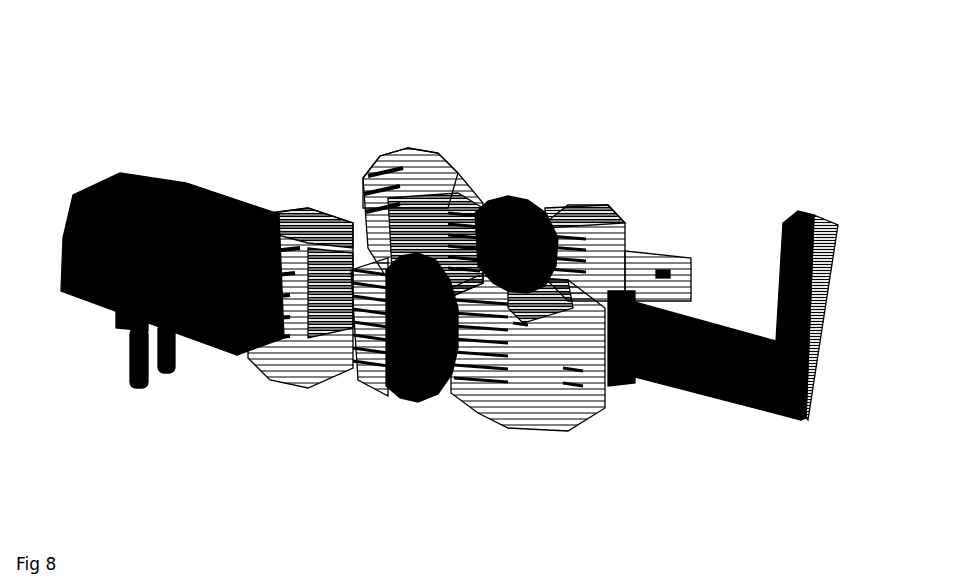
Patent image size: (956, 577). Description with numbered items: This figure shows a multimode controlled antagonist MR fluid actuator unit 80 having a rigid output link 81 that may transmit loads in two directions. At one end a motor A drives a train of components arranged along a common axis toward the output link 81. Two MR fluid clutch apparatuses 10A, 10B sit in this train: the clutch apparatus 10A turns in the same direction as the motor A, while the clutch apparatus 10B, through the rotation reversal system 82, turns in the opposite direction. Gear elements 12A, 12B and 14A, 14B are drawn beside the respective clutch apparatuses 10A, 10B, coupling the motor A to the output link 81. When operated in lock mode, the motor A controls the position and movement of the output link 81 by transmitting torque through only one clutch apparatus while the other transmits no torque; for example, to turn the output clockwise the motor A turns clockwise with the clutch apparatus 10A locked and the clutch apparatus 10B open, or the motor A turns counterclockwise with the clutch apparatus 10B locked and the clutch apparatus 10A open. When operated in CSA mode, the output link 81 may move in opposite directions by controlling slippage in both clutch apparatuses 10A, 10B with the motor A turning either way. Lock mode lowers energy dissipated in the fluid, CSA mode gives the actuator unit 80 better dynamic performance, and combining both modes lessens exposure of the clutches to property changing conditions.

The MR fluid actuator unit 80 is at (733, 82).
The motor A is at (188, 178).
The rotation reversal system 82 is at (368, 130).
The first gear 12A is at (305, 360).
The second gear 12B is at (447, 192).
The MR fluid clutch apparatus 10A is at (420, 390).
The MR fluid clutch apparatus 10B is at (538, 197).
The first output gear 14A is at (538, 402).
The second output gear 14B is at (614, 245).
The output link 81 is at (821, 245).